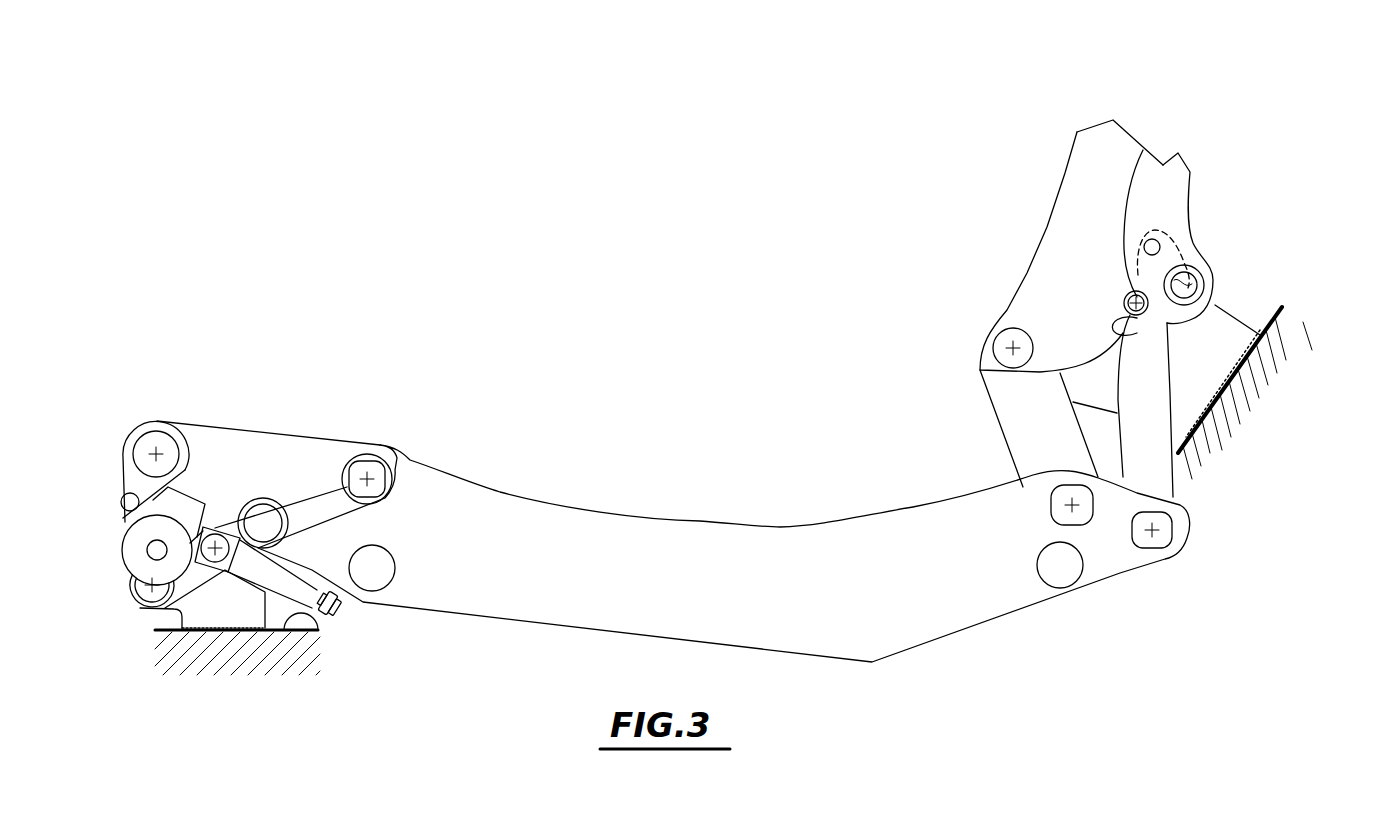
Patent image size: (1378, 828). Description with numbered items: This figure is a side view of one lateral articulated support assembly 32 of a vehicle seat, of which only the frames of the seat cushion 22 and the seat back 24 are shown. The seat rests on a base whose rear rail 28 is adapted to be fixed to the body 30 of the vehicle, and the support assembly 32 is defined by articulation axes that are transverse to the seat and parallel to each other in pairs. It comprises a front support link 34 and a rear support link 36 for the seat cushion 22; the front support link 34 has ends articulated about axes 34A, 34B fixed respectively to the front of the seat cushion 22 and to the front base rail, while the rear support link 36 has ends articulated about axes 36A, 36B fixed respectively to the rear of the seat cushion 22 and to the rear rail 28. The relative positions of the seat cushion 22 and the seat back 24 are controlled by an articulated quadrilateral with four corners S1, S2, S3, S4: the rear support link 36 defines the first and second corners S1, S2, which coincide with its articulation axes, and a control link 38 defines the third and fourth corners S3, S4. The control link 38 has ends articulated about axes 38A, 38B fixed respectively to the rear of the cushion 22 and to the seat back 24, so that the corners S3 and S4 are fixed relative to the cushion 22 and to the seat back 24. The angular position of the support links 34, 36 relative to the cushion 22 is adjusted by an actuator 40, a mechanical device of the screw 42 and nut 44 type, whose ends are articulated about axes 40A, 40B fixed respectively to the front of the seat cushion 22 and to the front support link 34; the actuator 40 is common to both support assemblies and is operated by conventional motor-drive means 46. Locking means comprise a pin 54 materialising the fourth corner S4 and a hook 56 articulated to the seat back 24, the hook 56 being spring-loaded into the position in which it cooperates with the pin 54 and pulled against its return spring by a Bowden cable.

The seat cushion 22 is at (693, 557).
The seat back 24 is at (218, 602).
The rear rail 28 is at (1223, 335).
The body 30 is at (320, 638).
The articulated support assembly 32 is at (883, 405).
The front support link 34 is at (327, 493).
The articulation axis 34A is at (374, 478).
The articulation axis 34B is at (152, 590).
The rear support link 36 is at (1033, 407).
The articulation axis 36A is at (1078, 520).
The articulation axis 36B is at (1005, 340).
The control link 38 is at (1150, 463).
The articulation axis 38A is at (1160, 537).
The articulation axis 38B is at (1144, 150).
The actuator 40 is at (310, 570).
The articulation axis 40A is at (153, 452).
The articulation axis 40B is at (215, 546).
The screw 42 is at (333, 614).
The nut 44 is at (258, 508).
The motor-drive means 46 is at (140, 552).
The pin 54 is at (1128, 298).
The hook 56 is at (1150, 327).
The first corner S1 is at (1068, 505).
The second corner S2 is at (1010, 349).
The third corner S3 is at (1162, 528).
The fourth corner S4 is at (1142, 290).